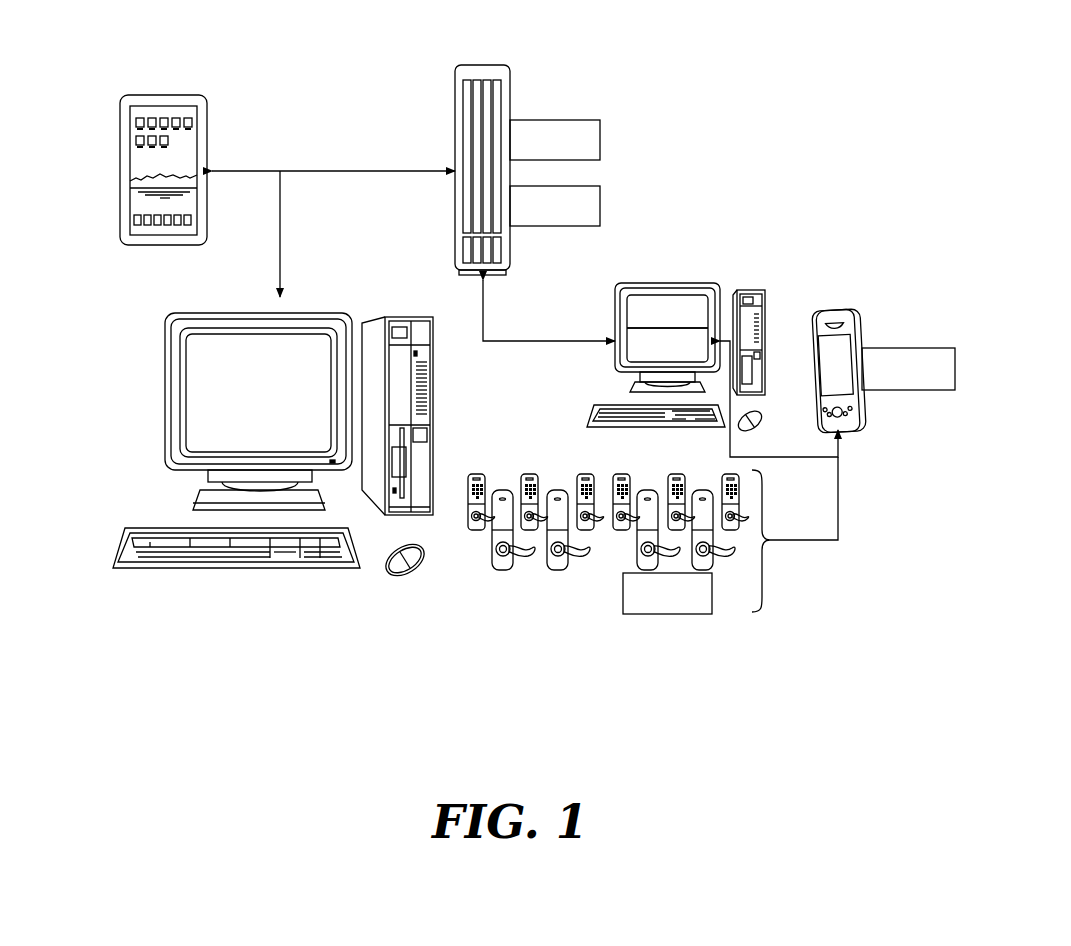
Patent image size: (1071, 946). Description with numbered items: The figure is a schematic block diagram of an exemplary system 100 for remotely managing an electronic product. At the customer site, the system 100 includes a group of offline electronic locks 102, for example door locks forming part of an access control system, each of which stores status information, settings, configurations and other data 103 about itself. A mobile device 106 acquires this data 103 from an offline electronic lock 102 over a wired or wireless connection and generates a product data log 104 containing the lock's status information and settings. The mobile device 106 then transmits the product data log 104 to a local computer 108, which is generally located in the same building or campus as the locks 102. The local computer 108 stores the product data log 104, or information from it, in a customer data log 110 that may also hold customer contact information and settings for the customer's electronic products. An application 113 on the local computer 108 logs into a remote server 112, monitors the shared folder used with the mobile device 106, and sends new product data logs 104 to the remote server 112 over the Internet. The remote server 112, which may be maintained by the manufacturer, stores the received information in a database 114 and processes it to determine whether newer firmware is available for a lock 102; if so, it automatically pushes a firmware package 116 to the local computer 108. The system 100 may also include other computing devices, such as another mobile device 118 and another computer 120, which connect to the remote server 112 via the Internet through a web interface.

The system 100 is at (340, 72).
The offline electronic lock 102 is at (610, 548).
The data 103 is at (667, 593).
The product data log 104 is at (908, 369).
The mobile device 106 is at (836, 305).
The local computer 108 is at (680, 278).
The customer data log 110 is at (667, 343).
The remote server 112 is at (528, 68).
The application 113 is at (667, 314).
The database 114 is at (555, 140).
The firmware package 116 is at (555, 206).
The mobile device 118 is at (110, 168).
The computer 120 is at (150, 452).